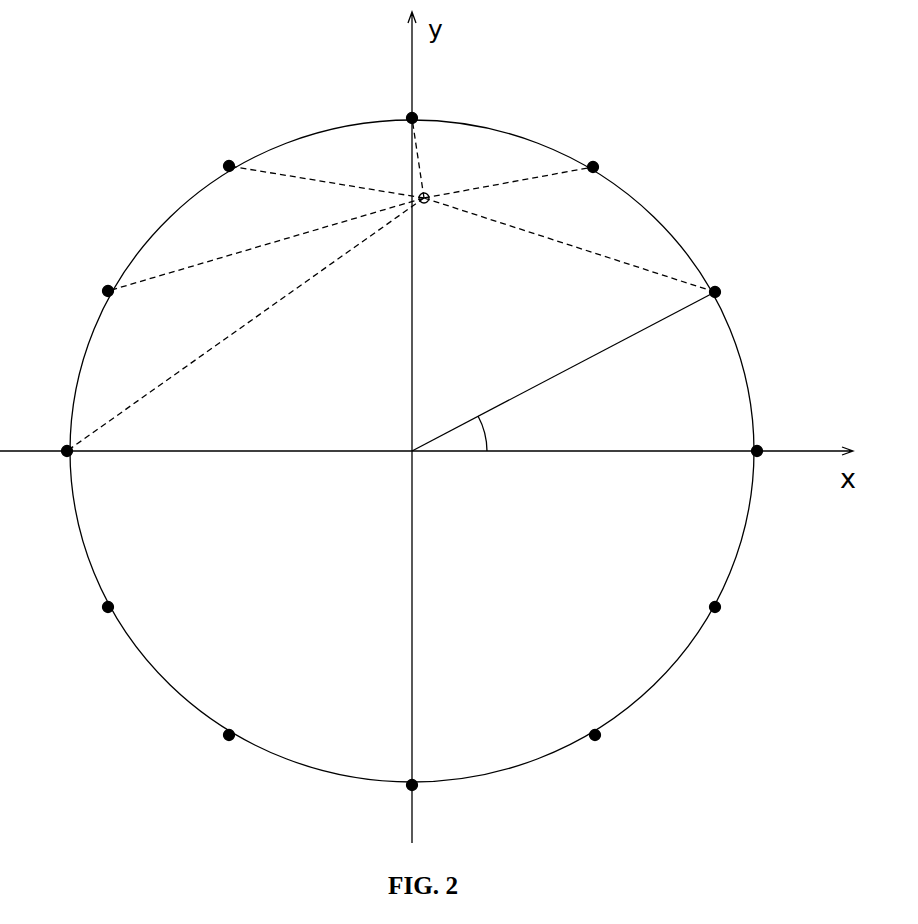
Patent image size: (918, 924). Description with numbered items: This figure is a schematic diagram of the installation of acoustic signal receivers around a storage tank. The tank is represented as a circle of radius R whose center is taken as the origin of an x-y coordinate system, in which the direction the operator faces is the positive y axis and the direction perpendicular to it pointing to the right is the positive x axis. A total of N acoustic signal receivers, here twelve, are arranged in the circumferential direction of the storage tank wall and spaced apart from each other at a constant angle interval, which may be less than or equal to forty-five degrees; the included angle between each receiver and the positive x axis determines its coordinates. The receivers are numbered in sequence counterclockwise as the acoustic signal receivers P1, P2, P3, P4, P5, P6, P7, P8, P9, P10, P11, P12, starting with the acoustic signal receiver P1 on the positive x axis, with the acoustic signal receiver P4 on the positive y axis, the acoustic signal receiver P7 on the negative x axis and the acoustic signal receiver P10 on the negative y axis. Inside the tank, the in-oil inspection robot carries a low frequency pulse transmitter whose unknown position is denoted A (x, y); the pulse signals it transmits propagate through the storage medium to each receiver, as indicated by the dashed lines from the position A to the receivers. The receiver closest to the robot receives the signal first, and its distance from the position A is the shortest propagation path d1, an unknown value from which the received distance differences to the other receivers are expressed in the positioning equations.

The acoustic signal receiver P1 is at (779, 470).
The acoustic signal receiver P2 is at (729, 275).
The acoustic signal receiver P3 is at (621, 166).
The acoustic signal receiver P4 is at (428, 97).
The acoustic signal receiver P5 is at (202, 151).
The acoustic signal receiver P6 is at (88, 277).
The acoustic signal receiver P7 is at (47, 432).
The acoustic signal receiver P8 is at (82, 602).
The acoustic signal receiver P9 is at (209, 750).
The acoustic signal receiver P10 is at (388, 806).
The acoustic signal receiver P11 is at (616, 757).
The acoustic signal receiver P12 is at (748, 607).
The acoustic signal transmitting position A is at (543, 288).
The shortest propagation path d1 is at (440, 146).